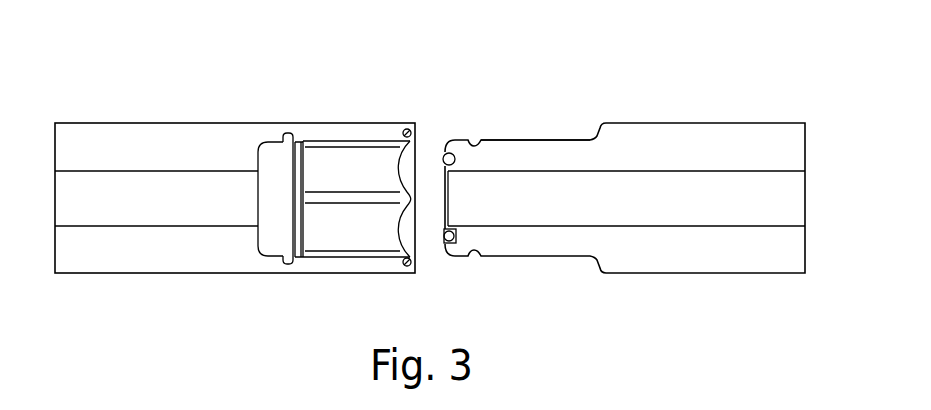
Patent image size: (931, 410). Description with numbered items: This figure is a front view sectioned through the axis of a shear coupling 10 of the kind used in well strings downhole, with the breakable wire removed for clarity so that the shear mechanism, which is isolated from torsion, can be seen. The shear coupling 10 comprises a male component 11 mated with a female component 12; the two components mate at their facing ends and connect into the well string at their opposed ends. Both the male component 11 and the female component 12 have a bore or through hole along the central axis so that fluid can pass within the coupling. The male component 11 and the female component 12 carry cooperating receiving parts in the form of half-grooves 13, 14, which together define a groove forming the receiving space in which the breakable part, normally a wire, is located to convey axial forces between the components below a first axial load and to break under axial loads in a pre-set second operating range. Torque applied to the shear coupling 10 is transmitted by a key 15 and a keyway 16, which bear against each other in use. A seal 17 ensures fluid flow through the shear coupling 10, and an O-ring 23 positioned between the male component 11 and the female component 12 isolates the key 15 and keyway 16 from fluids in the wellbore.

The shear coupling 10 is at (553, 72).
The male component 11 is at (695, 147).
The female component 12 is at (145, 263).
The half-groove 13 is at (473, 253).
The half-groove 14 is at (288, 133).
The key 15 is at (530, 138).
The keyway 16 is at (337, 242).
The seal 17 is at (457, 145).
The O-ring 23 is at (403, 128).